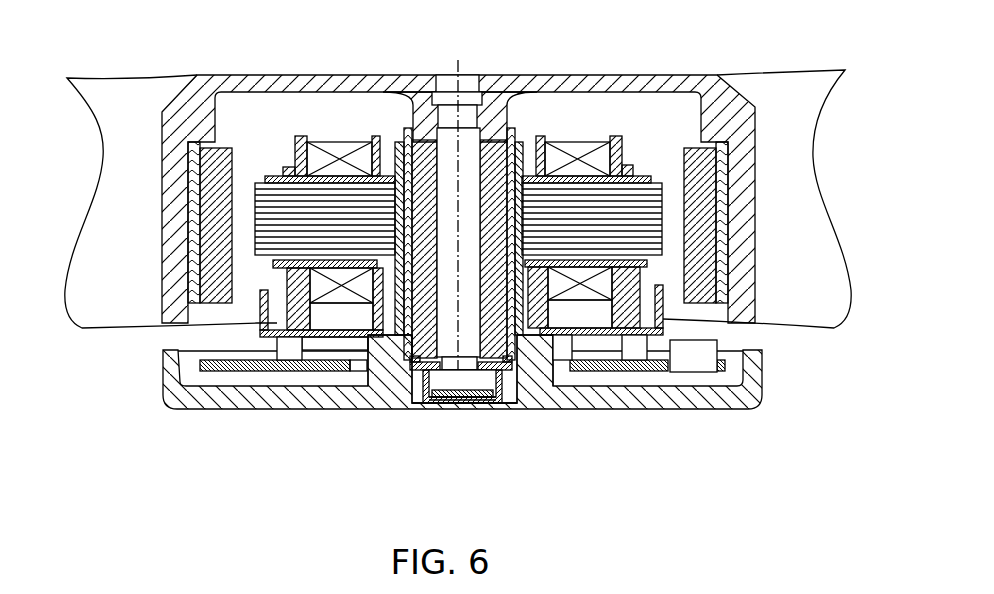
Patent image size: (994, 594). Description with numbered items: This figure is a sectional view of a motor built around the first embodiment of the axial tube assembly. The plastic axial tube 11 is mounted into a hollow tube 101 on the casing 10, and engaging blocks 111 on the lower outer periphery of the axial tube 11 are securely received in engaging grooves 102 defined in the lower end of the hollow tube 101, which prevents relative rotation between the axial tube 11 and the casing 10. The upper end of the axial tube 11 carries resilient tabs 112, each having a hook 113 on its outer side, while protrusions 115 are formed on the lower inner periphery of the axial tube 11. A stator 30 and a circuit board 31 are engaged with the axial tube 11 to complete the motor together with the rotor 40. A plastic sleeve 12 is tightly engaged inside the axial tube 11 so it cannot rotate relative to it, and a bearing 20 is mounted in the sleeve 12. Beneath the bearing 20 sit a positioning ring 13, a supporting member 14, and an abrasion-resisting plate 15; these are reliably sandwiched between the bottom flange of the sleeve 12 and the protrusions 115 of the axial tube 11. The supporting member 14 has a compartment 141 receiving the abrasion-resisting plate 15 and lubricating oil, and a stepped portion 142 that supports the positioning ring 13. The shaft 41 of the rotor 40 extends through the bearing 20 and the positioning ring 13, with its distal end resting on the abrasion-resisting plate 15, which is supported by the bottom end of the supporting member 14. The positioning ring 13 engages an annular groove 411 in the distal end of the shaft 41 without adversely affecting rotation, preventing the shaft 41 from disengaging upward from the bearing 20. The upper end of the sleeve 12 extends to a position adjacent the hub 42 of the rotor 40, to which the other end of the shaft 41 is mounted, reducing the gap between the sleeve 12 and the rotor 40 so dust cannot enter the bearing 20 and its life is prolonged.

The casing 10 is at (713, 392).
The hollow tube 101 is at (372, 373).
The engaging grooves 102 is at (533, 387).
The axial tube 11 is at (525, 335).
The engaging blocks 111 is at (518, 446).
The resilient tabs 112 is at (506, 115).
The hook 113 is at (530, 168).
The protrusions 115 is at (413, 398).
The sleeve 12 is at (404, 135).
The positioning ring 13 is at (432, 403).
The supporting member 14 is at (470, 403).
The compartment 141 is at (477, 403).
The stepped portion 142 is at (420, 400).
The abrasion-resisting plate 15 is at (452, 407).
The bearing 20 is at (421, 142).
The stator 30 is at (620, 305).
The circuit board 31 is at (682, 323).
The rotor 40 is at (690, 75).
The shaft 41 is at (446, 140).
The annular groove 411 is at (463, 407).
The hub 42 is at (520, 162).